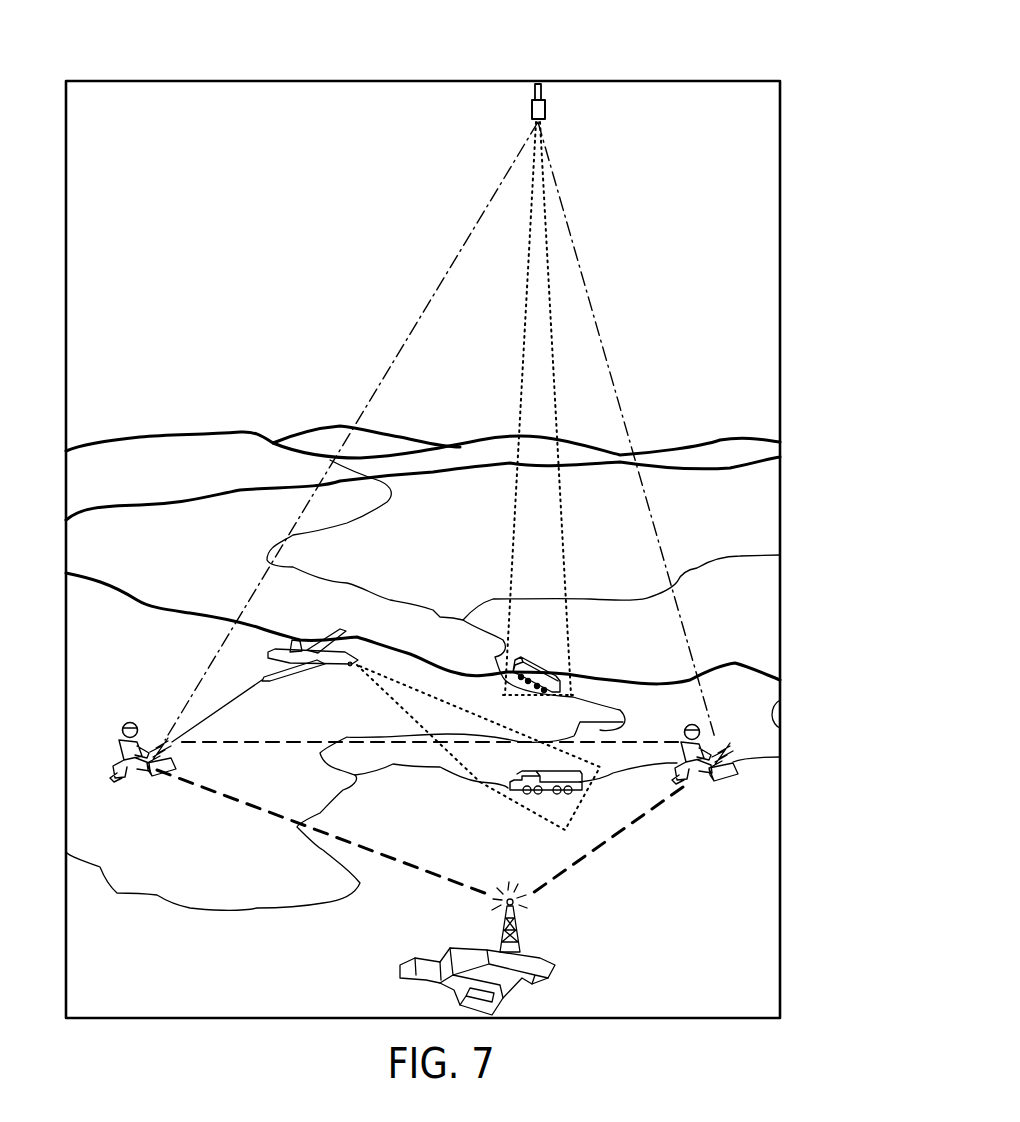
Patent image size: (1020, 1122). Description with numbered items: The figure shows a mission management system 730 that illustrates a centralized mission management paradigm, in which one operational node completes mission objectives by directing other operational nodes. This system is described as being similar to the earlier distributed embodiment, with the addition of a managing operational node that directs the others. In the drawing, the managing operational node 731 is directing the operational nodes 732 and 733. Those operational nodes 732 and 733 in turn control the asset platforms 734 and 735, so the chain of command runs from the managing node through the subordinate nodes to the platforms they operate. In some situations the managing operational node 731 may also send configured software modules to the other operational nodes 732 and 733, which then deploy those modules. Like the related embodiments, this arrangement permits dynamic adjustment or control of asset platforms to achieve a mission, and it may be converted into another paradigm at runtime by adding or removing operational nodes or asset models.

The mission management system 730 is at (793, 100).
The managing operational node 731 is at (540, 967).
The operational node 732 is at (138, 774).
The operational node 733 is at (707, 775).
The asset platform 734 is at (300, 665).
The asset platform 735 is at (545, 92).